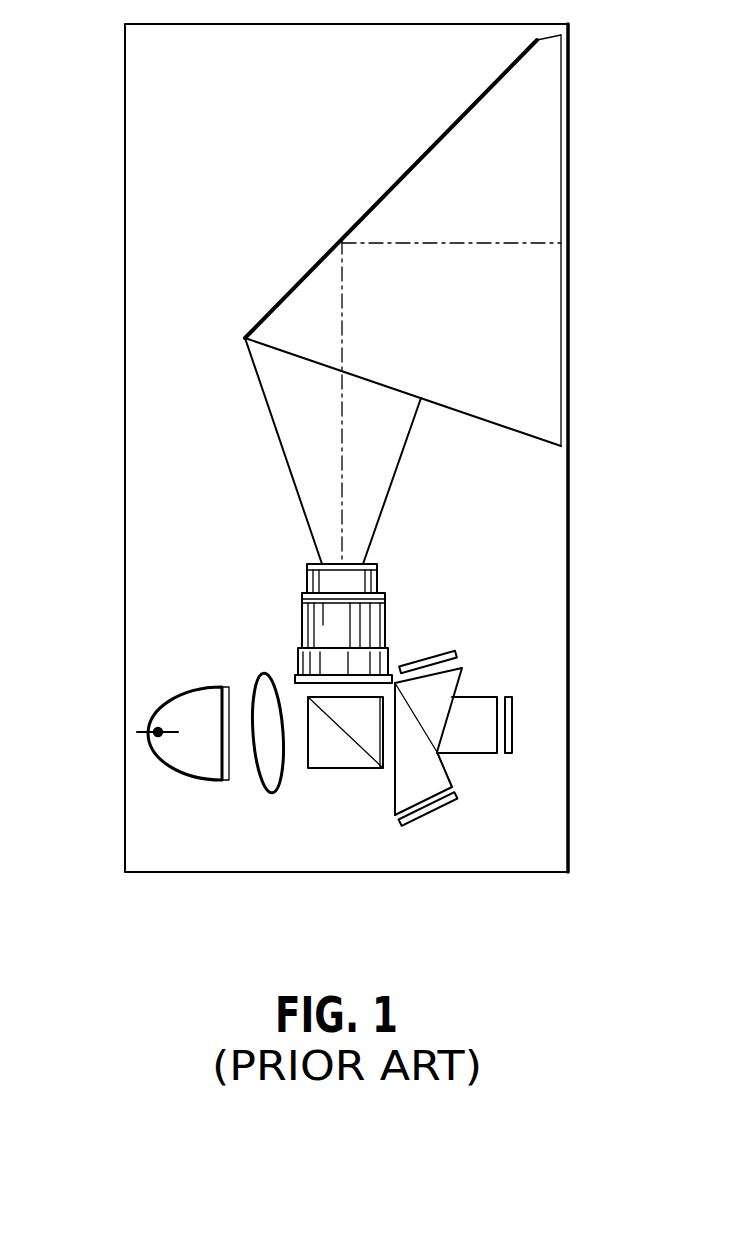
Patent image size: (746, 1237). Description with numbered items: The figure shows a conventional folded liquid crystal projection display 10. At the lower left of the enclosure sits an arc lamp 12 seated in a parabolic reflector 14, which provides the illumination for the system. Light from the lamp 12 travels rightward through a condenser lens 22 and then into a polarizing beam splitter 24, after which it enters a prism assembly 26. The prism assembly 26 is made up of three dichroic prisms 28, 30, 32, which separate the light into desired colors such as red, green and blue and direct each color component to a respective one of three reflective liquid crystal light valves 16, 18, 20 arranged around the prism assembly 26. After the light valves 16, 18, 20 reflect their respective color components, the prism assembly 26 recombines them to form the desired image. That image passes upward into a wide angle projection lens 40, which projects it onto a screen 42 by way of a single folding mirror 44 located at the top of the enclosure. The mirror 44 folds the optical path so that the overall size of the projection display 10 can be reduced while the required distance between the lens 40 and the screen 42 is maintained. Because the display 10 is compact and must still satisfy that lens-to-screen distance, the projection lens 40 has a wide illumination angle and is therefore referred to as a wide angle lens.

The folded liquid crystal projection display 10 is at (117, 525).
The arc lamp 12 is at (143, 737).
The parabolic reflector 14 is at (165, 703).
The reflective liquid crystal light valve 16 is at (423, 818).
The reflective liquid crystal light valve 18 is at (515, 708).
The reflective liquid crystal light valve 20 is at (432, 652).
The condenser lens 22 is at (268, 773).
The polarizing beam splitter 24 is at (334, 769).
The prism assembly 26 is at (394, 791).
The dichroic prism 28 is at (440, 774).
The dichroic prism 30 is at (481, 748).
The dichroic prism 32 is at (457, 687).
The wide angle projection lens 40 is at (287, 605).
The screen 42 is at (567, 183).
The folding mirror 44 is at (409, 165).